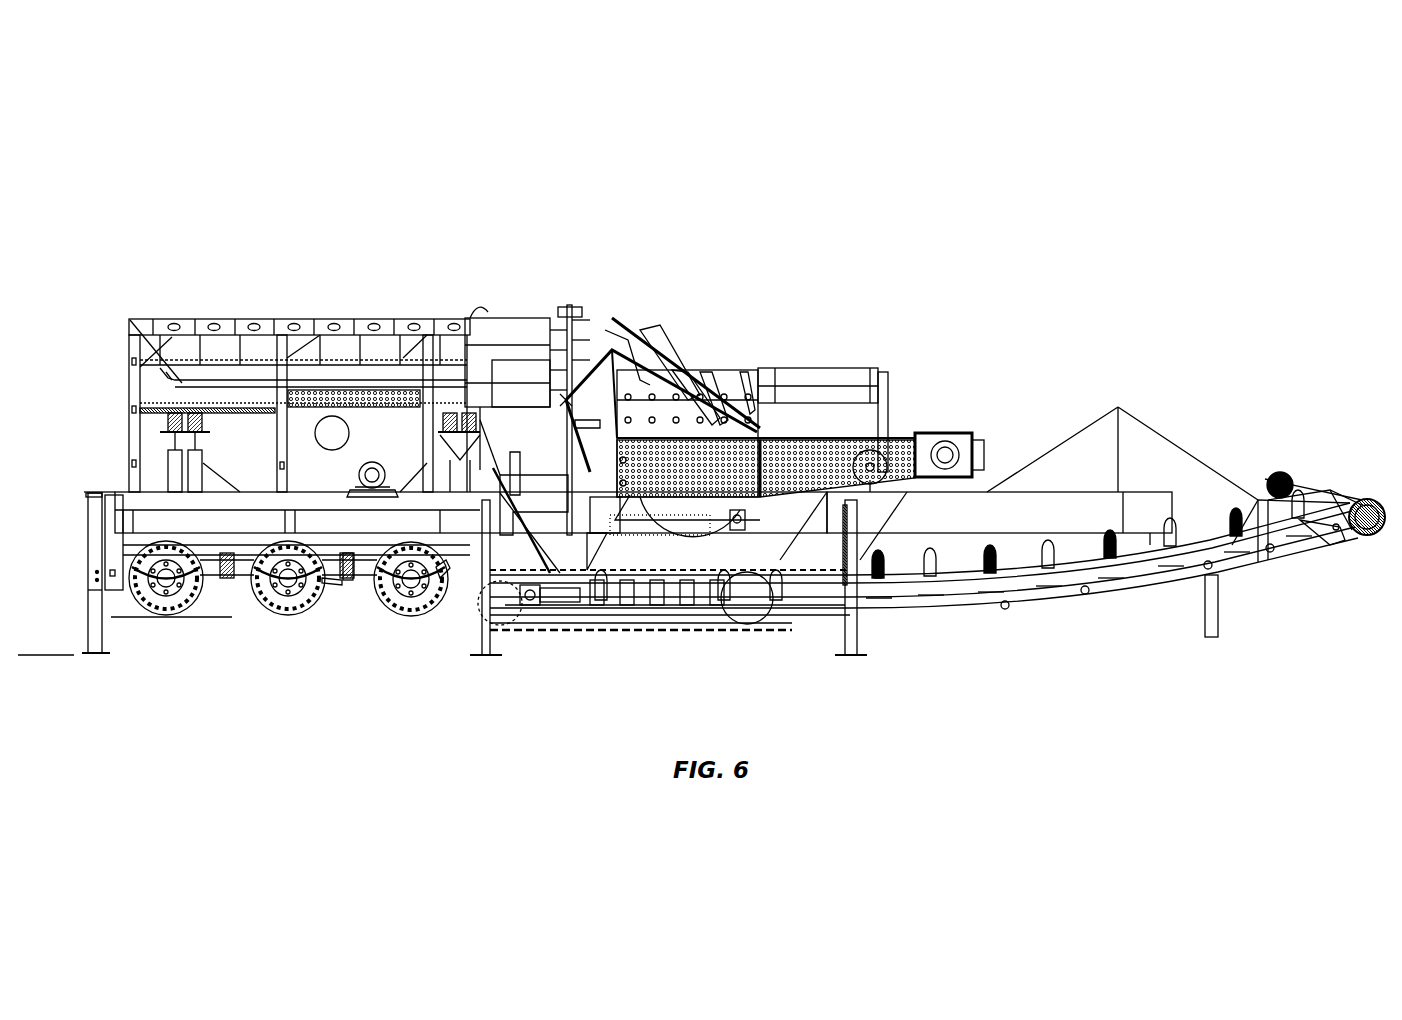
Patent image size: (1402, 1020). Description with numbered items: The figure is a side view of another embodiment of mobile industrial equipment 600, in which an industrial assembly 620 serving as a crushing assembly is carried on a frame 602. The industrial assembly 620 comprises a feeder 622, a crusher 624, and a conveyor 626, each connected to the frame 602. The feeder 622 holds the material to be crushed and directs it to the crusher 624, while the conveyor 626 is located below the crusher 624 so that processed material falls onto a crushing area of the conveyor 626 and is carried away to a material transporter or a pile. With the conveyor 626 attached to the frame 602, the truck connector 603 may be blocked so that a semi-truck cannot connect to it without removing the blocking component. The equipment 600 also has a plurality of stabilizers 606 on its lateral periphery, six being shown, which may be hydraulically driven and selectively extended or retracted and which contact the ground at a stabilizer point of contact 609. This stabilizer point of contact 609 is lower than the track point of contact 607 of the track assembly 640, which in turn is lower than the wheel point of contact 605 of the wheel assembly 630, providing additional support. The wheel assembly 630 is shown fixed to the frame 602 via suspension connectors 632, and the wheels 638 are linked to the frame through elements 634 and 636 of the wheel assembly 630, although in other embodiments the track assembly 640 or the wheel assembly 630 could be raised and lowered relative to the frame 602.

The mobile industrial equipment 600 is at (323, 145).
The frame 602 is at (90, 492).
The truck connector 603 is at (1147, 535).
The wheel point of contact 605 is at (137, 618).
The stabilizers 606 is at (86, 592).
The track point of contact 607 is at (770, 633).
The stabilizer point of contact 609 is at (42, 657).
The industrial assembly 620 is at (195, 287).
The feeder 622 is at (321, 308).
The crusher 624 is at (706, 341).
The conveyor 626 is at (1238, 474).
The wheel assembly 630 is at (203, 658).
The suspension connectors 632 is at (357, 580).
The suspension link 634 is at (333, 588).
The suspension bracket 636 is at (440, 600).
The wheel 638 is at (172, 618).
The track assembly 640 is at (587, 648).